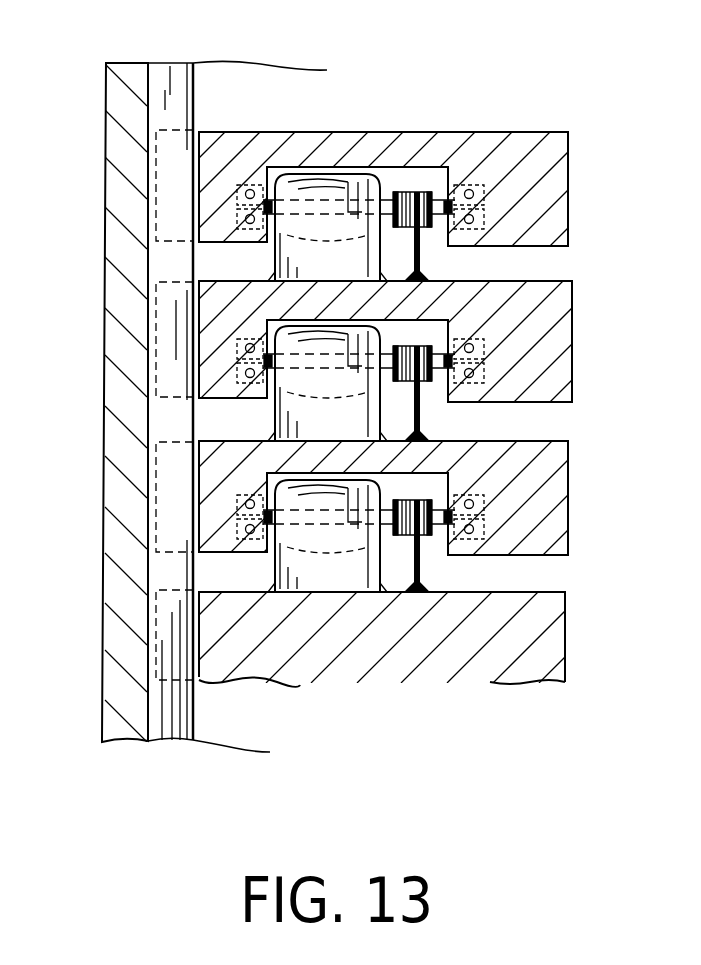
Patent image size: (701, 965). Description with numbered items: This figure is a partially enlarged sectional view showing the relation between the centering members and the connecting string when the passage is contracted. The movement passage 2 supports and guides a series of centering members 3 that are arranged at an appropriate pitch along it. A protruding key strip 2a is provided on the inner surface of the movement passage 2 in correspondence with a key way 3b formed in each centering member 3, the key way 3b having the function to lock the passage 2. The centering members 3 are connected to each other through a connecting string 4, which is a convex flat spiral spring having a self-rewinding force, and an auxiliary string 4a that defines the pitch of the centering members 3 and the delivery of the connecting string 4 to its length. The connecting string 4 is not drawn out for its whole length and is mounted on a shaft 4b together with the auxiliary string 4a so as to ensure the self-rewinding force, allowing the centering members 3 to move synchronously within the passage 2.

The movement passage 2 is at (98, 172).
The protruding key strip 2a is at (163, 100).
The centering member 3 is at (474, 155).
The key way 3b is at (197, 141).
The connecting string 4 is at (285, 257).
The auxiliary string 4a is at (422, 247).
The shaft 4b is at (392, 190).